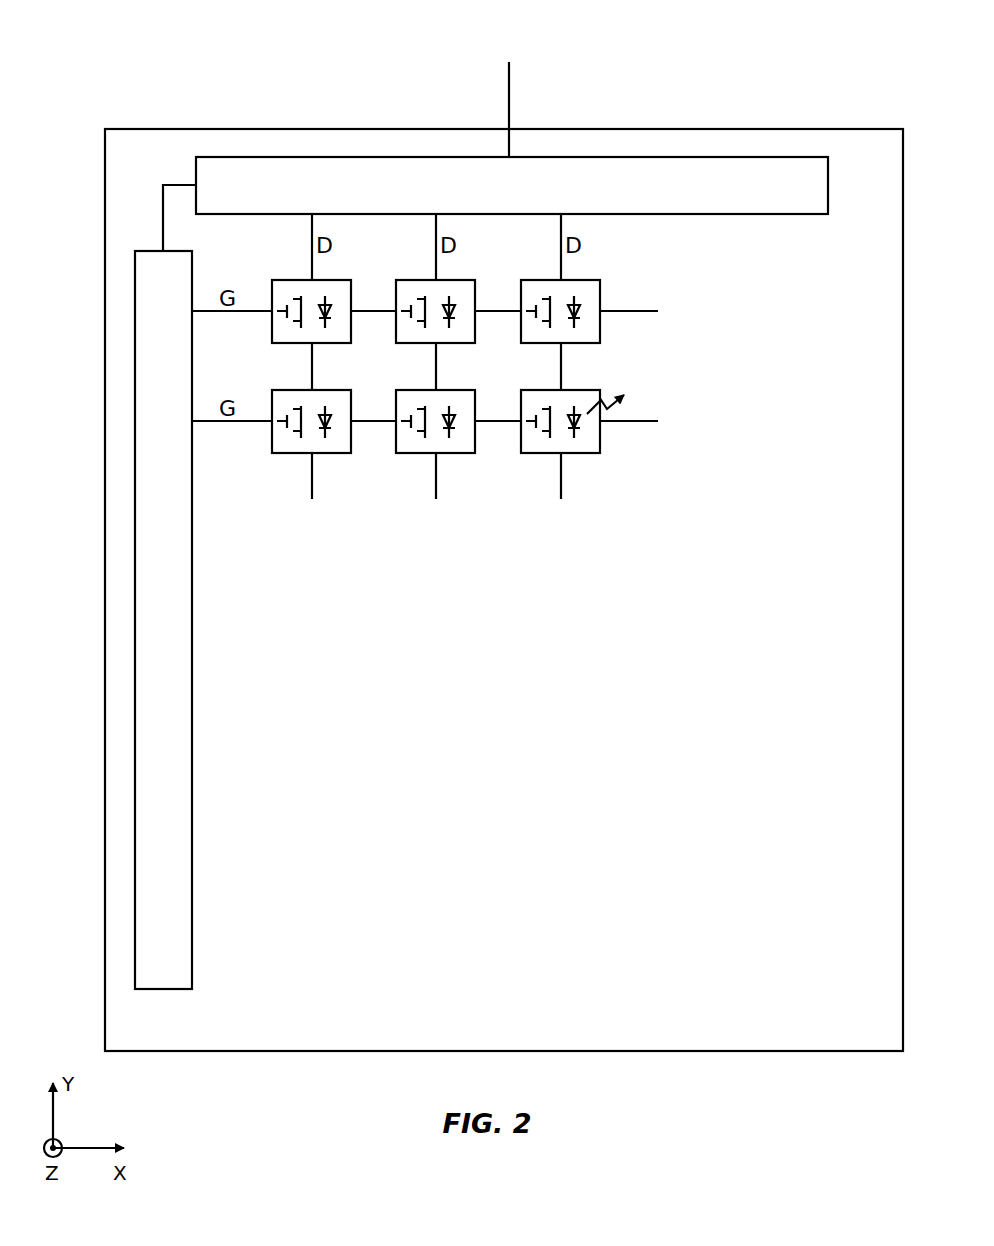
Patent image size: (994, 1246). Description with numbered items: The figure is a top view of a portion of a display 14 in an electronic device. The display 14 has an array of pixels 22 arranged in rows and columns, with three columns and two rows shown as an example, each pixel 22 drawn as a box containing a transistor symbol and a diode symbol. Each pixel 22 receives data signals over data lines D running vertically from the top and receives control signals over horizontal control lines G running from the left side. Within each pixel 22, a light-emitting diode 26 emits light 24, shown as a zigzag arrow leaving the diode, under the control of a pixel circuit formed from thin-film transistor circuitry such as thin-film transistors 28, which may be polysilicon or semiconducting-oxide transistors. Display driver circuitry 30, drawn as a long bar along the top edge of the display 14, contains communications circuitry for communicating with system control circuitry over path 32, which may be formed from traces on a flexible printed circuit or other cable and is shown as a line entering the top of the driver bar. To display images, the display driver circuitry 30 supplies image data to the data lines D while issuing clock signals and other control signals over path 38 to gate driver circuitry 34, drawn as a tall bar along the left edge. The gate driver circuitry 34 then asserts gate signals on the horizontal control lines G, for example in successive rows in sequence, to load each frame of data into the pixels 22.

The display 14 is at (769, 72).
The pixel 22 is at (602, 289).
The light 24 is at (615, 402).
The light-emitting diode 26 is at (587, 440).
The thin-film transistor 28 is at (535, 440).
The display driver circuitry 30 is at (664, 156).
The path 32 is at (510, 84).
The gate driver circuitry 34 is at (163, 990).
The path 38 is at (172, 184).